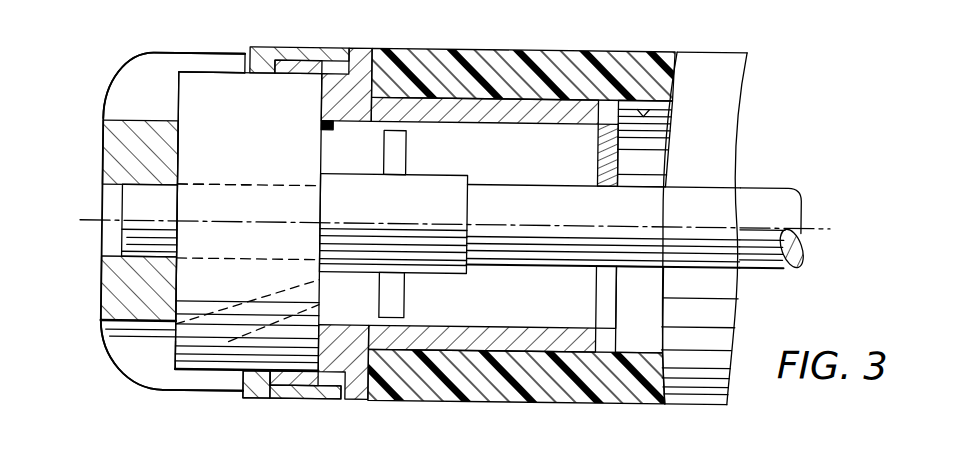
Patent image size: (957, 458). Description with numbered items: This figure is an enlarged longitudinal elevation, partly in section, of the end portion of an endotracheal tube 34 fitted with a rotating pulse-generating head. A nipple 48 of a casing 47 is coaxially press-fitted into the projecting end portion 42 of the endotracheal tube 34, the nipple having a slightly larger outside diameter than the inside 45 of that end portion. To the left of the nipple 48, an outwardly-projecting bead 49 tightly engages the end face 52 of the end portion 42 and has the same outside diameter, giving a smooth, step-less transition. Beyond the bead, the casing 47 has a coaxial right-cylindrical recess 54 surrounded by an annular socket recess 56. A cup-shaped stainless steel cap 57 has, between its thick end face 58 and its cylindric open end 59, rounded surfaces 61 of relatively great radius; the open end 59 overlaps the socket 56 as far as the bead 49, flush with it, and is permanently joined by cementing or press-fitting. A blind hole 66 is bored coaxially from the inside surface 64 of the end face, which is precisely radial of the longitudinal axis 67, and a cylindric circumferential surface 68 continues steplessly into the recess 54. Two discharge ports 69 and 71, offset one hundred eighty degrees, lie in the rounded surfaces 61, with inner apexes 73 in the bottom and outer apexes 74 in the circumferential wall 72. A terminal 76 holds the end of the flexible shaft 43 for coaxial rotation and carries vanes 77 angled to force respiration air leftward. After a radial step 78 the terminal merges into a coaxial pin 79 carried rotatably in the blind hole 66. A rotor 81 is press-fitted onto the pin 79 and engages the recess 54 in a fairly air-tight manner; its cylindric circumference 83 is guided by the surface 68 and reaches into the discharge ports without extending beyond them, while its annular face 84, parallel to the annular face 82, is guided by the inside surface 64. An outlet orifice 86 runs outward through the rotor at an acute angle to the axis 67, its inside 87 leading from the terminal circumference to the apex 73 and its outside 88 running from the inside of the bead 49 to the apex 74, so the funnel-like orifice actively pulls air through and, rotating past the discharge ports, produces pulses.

The endotracheal tube 34 is at (710, 72).
The projecting end portion 42 is at (532, 52).
The flexible shaft 43 is at (765, 200).
The inside of the end portion 45 is at (664, 65).
The casing 47 is at (515, 333).
The nipple 48 is at (567, 118).
The outwardly-projecting bead 49 is at (364, 64).
The end face 52 is at (367, 370).
The cylindric recess 54 is at (318, 93).
The socket recess 56 is at (277, 385).
The cap 57 is at (112, 83).
The end face 58 is at (105, 195).
The open end 59 is at (250, 397).
The rounded surfaces 61 is at (112, 364).
The inside surface 64 is at (177, 132).
The blind hole 66 is at (170, 192).
The longitudinal axis 67 is at (500, 230).
The cylindric circumferential surface 68 is at (240, 75).
The discharge port 69 is at (150, 62).
The discharge port 71 is at (157, 367).
The circumferential wall 72 is at (268, 366).
The inner apex 73 is at (130, 118).
The outer apex 74 is at (245, 56).
The terminal 76 is at (428, 258).
The vanes 77 is at (405, 151).
The radial step 78 is at (320, 176).
The pin 79 is at (297, 182).
The rotor 81 is at (102, 278).
The annular face 82 is at (337, 118).
The cylindric circumference 83 is at (170, 368).
The annular face 84 is at (172, 90).
The outlet orifice 86 is at (367, 295).
The inside of the orifice 87 is at (252, 291).
The outside of the orifice 88 is at (308, 397).